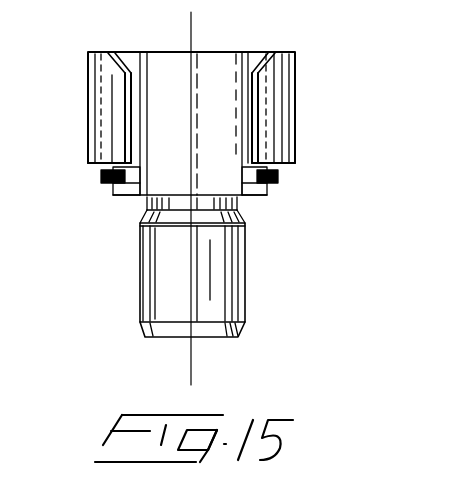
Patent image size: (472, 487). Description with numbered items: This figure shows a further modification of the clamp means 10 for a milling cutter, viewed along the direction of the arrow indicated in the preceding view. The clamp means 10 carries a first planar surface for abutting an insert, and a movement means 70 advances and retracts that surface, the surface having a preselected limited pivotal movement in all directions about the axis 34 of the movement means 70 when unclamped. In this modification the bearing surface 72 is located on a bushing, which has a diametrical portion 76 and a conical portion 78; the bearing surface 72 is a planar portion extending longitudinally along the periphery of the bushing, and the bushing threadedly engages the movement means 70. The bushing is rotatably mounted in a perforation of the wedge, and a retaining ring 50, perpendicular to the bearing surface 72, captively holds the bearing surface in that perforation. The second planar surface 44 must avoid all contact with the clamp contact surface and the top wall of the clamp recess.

The clamp means 10 is at (312, 156).
The axis of the movement means 34 is at (193, 24).
The second planar surface 44 is at (290, 124).
The retaining ring 50 is at (101, 177).
The movement means 70 is at (218, 284).
The bearing surface 72 is at (164, 118).
The diametrical portion 76 is at (252, 105).
The conical portion 78 is at (258, 62).